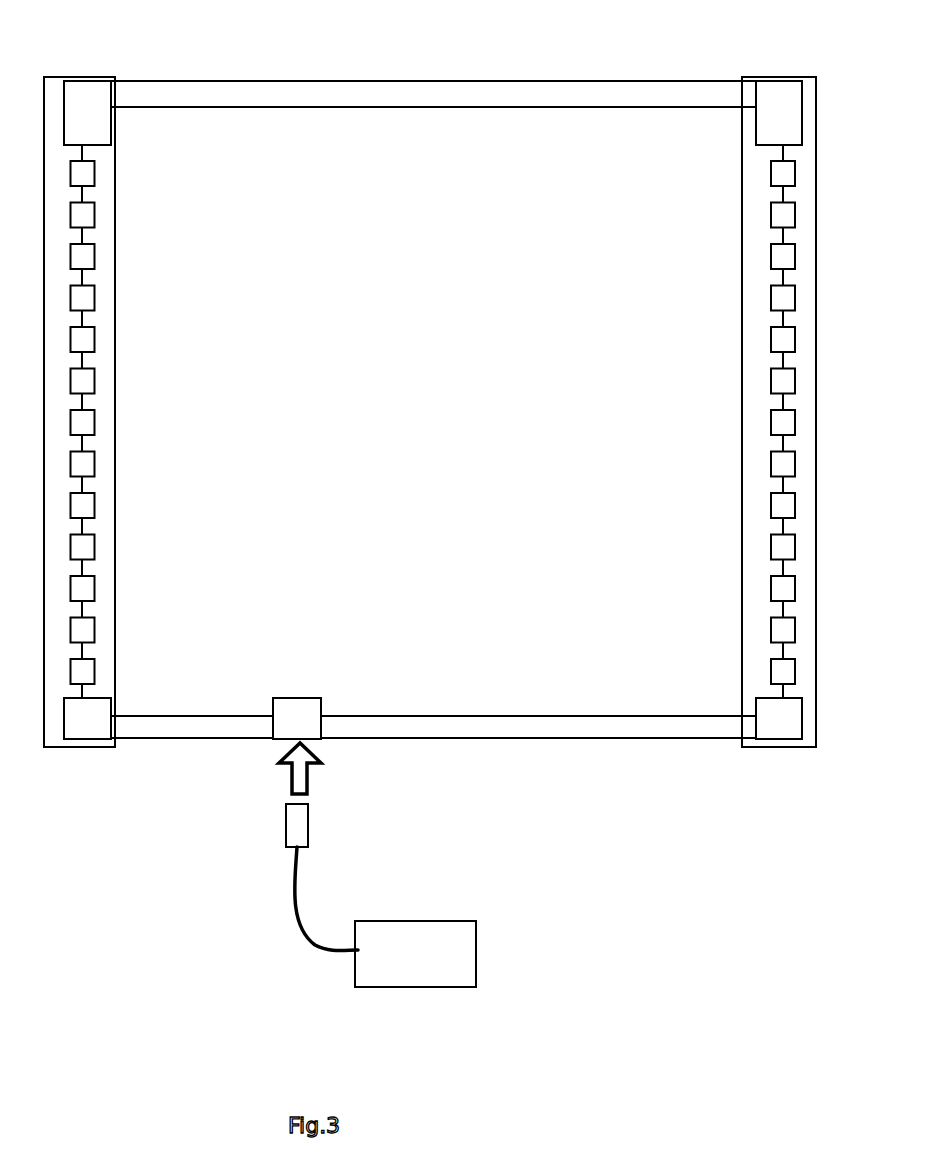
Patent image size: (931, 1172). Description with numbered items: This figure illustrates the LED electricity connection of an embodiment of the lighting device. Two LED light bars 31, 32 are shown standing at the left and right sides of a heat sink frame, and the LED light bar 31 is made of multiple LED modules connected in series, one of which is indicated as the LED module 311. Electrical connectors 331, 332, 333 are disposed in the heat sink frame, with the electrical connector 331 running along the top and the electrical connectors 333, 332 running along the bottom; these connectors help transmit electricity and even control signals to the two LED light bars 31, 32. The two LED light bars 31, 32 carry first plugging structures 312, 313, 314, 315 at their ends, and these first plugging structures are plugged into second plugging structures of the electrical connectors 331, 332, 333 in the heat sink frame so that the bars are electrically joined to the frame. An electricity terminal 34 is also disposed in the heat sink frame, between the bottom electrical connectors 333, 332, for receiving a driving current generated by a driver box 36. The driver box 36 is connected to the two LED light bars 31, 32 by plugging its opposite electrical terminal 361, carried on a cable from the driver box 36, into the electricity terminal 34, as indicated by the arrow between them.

The LED light bar 31 is at (131, 412).
The light-emitting element 311 is at (82, 340).
The first plugging structure 312 is at (88, 105).
The first plugging structure 313 is at (783, 93).
The first plugging structure 314 is at (776, 732).
The first plugging structure 315 is at (83, 728).
The LED light bar 32 is at (755, 270).
The electrical connector 331 is at (313, 90).
The electrical connector 332 is at (433, 730).
The electrical connector 333 is at (172, 732).
The electricity terminal 34 is at (299, 717).
The driver box 36 is at (458, 952).
The opposite electrical terminal 361 is at (303, 831).